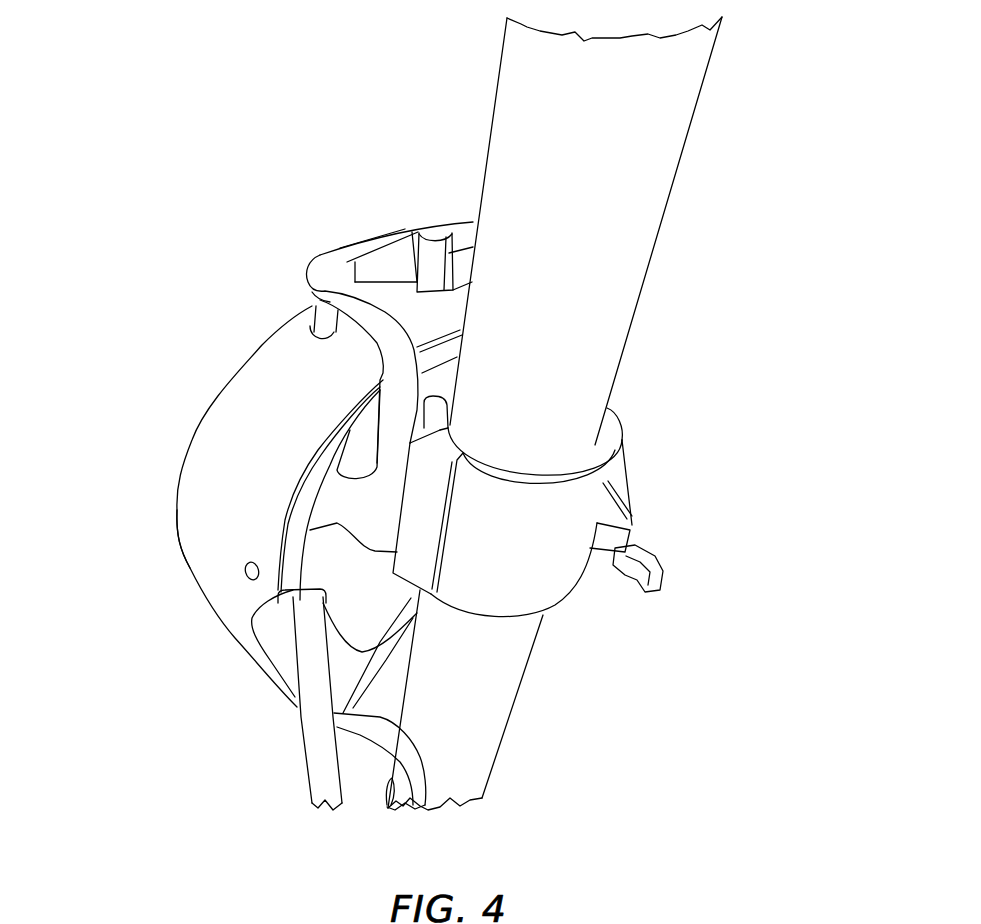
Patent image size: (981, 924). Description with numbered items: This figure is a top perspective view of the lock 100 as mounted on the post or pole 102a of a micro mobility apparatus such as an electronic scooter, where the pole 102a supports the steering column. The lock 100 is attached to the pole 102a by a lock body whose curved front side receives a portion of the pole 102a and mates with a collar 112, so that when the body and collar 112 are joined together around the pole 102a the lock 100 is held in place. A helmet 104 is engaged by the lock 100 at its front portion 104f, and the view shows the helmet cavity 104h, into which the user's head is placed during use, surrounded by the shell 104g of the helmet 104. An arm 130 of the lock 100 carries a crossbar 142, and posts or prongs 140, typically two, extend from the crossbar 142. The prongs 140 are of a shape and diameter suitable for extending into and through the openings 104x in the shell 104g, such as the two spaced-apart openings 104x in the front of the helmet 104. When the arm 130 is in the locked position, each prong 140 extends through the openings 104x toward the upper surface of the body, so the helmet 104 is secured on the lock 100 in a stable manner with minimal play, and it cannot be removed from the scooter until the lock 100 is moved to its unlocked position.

The lock 100 is at (297, 248).
The post or pole 102a is at (606, 185).
The helmet 104 is at (300, 394).
The front portion of the helmet 104f is at (453, 307).
The shell of the helmet 104g is at (178, 483).
The helmet cavity 104h is at (354, 591).
The openings 104x is at (317, 282).
The collar 112 is at (613, 481).
The arm 130 is at (343, 227).
The posts or prongs 140 is at (426, 226).
The crossbar 142 is at (392, 221).